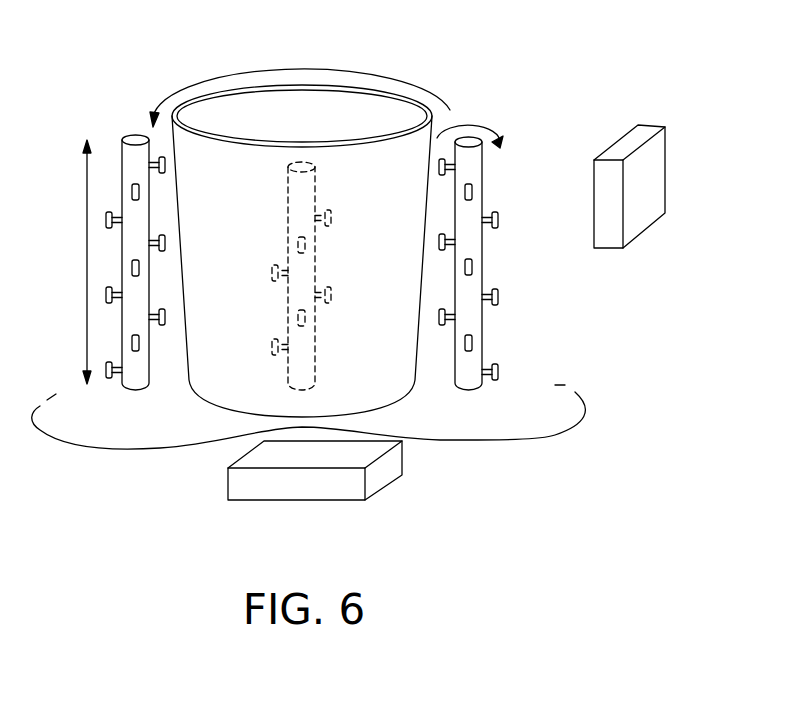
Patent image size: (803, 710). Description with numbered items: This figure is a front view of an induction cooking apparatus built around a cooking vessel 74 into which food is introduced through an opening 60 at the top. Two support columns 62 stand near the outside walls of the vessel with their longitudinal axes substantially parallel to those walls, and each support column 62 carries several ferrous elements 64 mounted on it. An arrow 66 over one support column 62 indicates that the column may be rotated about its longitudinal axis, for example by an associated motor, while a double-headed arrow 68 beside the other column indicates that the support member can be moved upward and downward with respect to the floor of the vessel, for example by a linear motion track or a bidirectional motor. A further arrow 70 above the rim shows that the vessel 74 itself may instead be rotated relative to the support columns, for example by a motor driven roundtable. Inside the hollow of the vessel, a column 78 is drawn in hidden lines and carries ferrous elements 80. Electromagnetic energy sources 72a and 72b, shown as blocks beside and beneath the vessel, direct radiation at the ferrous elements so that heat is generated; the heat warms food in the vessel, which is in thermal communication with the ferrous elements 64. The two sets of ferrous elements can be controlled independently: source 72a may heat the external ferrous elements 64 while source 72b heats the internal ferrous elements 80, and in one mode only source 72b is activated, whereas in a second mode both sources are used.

The opening 60 is at (372, 107).
The support column 62 is at (478, 322).
The ferrous element 64 is at (496, 210).
The arrow 66 is at (472, 127).
The arrow 68 is at (86, 263).
The arrow 70 is at (303, 65).
The electromagnetic energy source 72a is at (648, 205).
The electromagnetic energy source 72b is at (298, 485).
The cooking vessel 74 is at (188, 342).
The column 78 is at (311, 180).
The ferrous element 80 is at (324, 296).